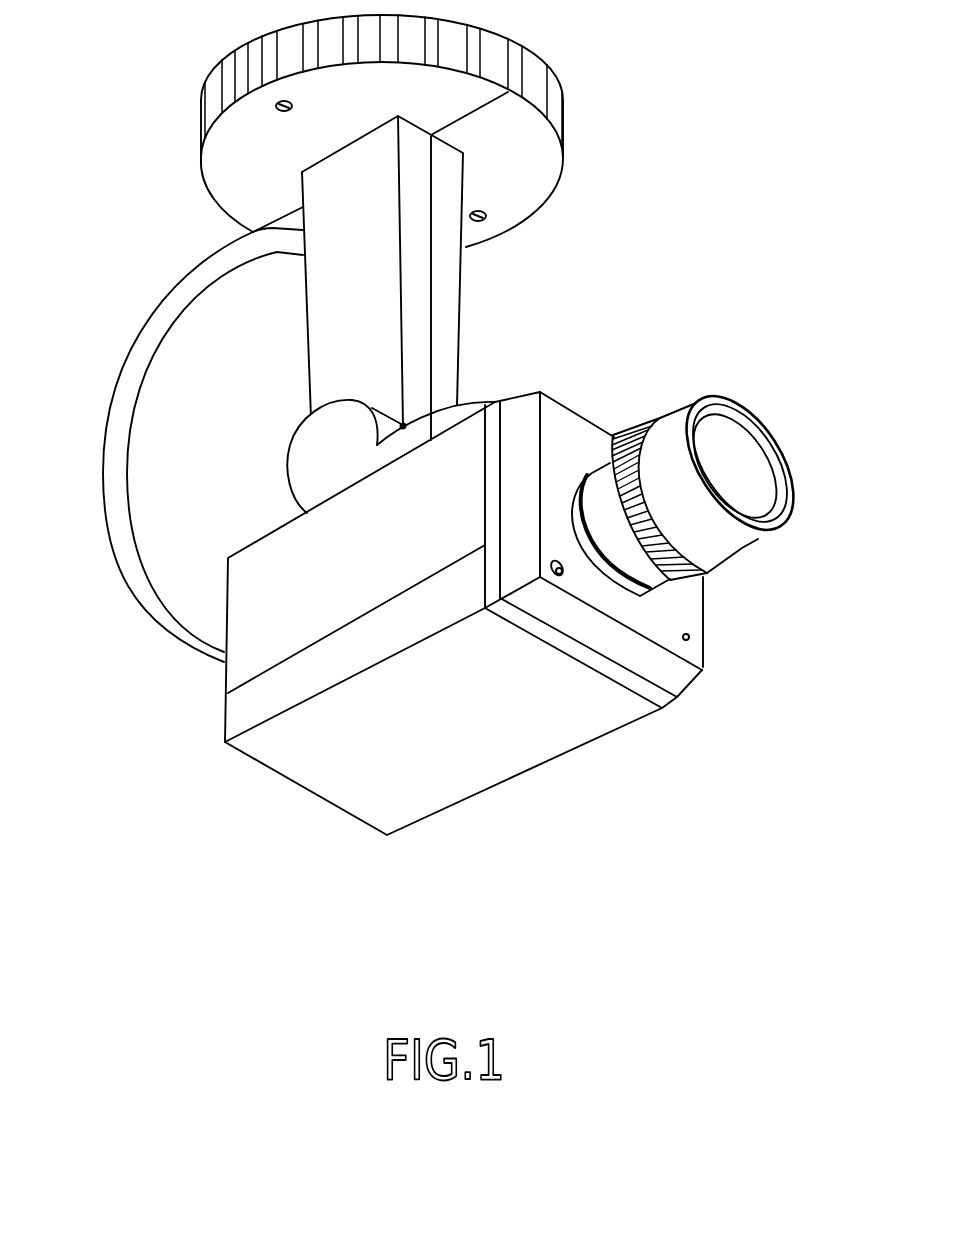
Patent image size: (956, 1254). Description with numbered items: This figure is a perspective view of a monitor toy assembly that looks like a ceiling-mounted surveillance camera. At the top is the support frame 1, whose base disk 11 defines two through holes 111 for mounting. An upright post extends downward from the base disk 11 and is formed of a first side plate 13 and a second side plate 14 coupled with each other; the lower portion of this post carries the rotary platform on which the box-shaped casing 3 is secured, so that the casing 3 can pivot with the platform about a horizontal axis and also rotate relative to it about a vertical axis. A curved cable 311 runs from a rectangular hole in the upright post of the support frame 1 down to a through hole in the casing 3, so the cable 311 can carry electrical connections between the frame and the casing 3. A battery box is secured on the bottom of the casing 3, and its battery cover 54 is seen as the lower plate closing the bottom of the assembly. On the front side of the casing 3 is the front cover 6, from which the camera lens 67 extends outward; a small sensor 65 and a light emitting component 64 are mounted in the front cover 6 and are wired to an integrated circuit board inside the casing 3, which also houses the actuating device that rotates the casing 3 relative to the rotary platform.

The support frame 1 is at (453, 458).
The base disk 11 is at (567, 108).
The through holes 111 is at (276, 108).
The first side plate 13 is at (448, 314).
The second side plate 14 is at (338, 340).
The cable 311 is at (125, 383).
The casing 3 is at (243, 660).
The battery cover 54 is at (339, 787).
The front cover 6 is at (665, 600).
The light emitting component 64 is at (561, 578).
The sensor 65 is at (690, 637).
The camera lens 67 is at (789, 457).